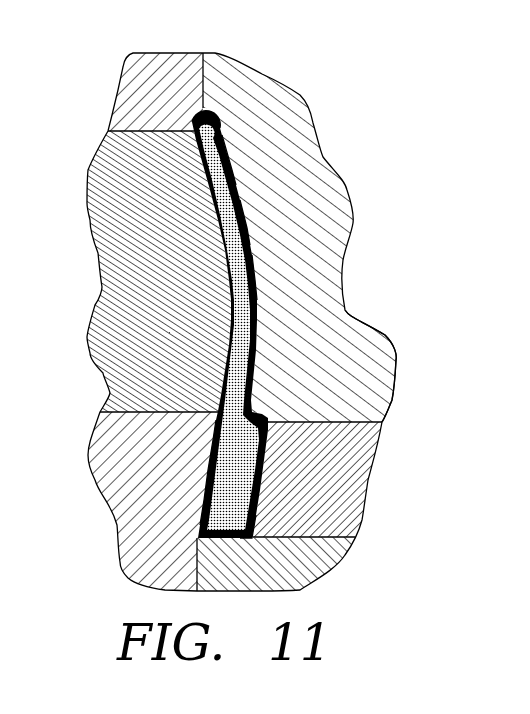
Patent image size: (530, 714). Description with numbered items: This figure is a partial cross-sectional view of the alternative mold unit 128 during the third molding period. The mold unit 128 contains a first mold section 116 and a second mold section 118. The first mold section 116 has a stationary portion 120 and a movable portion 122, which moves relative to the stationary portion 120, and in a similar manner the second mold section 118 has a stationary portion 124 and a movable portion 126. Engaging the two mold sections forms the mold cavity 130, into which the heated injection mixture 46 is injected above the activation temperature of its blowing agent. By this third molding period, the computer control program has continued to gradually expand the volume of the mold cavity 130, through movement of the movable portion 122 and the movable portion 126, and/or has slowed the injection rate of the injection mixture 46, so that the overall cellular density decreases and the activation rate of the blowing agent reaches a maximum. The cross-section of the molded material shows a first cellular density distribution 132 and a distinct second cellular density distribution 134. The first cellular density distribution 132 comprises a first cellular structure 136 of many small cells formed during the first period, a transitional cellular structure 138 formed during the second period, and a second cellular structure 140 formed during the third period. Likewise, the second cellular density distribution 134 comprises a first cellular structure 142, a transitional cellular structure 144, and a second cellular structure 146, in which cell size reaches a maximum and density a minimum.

The injection mixture 46 is at (245, 185).
The first mold section 116 is at (120, 565).
The second mold section 118 is at (315, 310).
The stationary portion 120 is at (122, 443).
The movable portion 122 is at (110, 170).
The stationary portion 124 is at (338, 322).
The movable portion 126 is at (328, 500).
The mold unit 128 is at (325, 75).
The mold cavity 130 is at (212, 110).
The first cellular density distribution 132 is at (250, 222).
The second cellular density distribution 134 is at (204, 481).
The first cellular structure 136 is at (233, 160).
The transitional cellular structure 138 is at (257, 268).
The second cellular structure 140 is at (378, 420).
The first cellular structure 142 is at (300, 536).
The transitional cellular structure 144 is at (312, 580).
The second cellular structure 146 is at (286, 594).